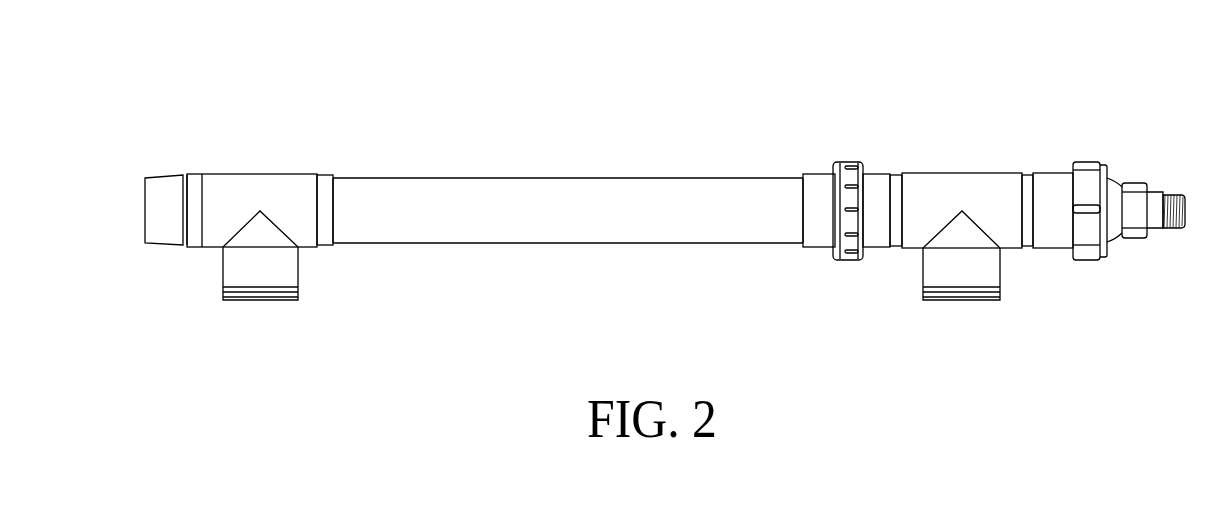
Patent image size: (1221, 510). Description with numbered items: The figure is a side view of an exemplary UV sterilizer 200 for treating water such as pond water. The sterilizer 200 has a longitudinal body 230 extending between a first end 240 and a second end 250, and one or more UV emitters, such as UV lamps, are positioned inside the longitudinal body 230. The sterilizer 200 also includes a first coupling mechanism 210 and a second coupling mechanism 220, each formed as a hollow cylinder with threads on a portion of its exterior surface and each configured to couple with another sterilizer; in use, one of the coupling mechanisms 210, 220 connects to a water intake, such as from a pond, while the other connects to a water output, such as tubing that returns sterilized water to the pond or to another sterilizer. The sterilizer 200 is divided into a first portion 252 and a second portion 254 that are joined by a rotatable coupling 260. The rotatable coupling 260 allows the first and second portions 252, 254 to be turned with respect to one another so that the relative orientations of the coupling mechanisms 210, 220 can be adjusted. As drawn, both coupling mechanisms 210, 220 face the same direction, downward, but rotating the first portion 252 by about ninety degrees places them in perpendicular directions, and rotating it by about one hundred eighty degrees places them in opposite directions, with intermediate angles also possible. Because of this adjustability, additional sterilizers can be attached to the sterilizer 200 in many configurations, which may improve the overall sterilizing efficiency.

The UV sterilizer 200 is at (733, 48).
The first coupling mechanism 210 is at (234, 322).
The second coupling mechanism 220 is at (987, 245).
The longitudinal body 230 is at (568, 206).
The first end 240 is at (159, 158).
The second end 250 is at (1159, 165).
The first portion 252 is at (563, 243).
The second portion 254 is at (985, 172).
The rotatable coupling 260 is at (857, 162).